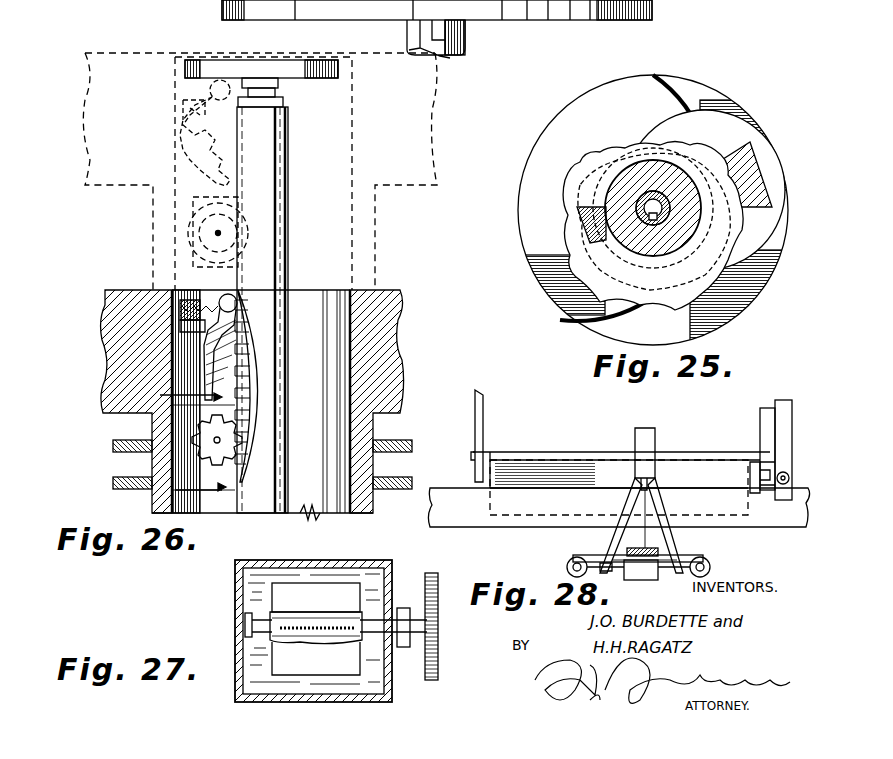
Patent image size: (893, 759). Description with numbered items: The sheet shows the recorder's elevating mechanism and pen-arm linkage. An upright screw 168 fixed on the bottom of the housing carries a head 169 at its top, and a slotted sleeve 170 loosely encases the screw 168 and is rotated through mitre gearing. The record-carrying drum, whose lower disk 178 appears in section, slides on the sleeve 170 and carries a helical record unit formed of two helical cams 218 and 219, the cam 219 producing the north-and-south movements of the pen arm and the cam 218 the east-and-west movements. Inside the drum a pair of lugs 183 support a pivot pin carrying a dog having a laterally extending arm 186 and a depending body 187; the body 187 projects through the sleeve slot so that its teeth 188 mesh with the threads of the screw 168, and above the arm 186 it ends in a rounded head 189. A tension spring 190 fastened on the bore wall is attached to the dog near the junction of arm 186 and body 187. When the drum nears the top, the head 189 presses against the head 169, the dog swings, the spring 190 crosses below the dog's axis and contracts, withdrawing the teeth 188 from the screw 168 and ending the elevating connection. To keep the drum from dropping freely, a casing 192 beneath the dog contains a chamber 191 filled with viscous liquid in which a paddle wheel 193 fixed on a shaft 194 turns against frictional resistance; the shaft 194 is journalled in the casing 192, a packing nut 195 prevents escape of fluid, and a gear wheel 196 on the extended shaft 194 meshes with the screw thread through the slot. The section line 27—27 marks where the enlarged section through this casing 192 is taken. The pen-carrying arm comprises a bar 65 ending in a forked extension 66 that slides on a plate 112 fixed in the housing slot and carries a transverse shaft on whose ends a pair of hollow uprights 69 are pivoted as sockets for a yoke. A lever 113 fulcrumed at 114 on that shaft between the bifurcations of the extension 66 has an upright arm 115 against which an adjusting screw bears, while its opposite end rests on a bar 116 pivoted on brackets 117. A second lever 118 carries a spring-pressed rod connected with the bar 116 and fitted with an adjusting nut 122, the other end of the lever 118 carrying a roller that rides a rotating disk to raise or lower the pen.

In FIG. 26, the head 169 is at (245, 70).
In FIG. 26, the upright screw 168 is at (280, 94).
In FIG. 26, the sleeve 170 is at (290, 148).
In FIG. 26, the depending body 187 is at (190, 148).
In FIG. 26, the lugs 183 is at (173, 313).
In FIG. 26, the tension spring 190 is at (170, 307).
In FIG. 26, the rounded head 189 is at (207, 302).
In FIG. 26, the laterally extending arm 186 is at (200, 332).
In FIG. 26, the teeth 188 is at (233, 338).
In FIG. 26, the casing 192 is at (240, 412).
In FIG. 27, the casing 192 is at (335, 562).
In FIG. 26, the gear wheel 196 is at (230, 440).
In FIG. 27, the gear wheel 196 is at (436, 680).
In FIG. 26, the section line 27— 27 is at (180, 442).
In FIG. 27, the chamber 191 is at (262, 588).
In FIG. 27, the paddle wheel 193 is at (316, 629).
In FIG. 27, the shaft 194 is at (418, 616).
In FIG. 27, the packing nut 195 is at (402, 648).
In FIG. 25, the helical cam 218 is at (685, 108).
In FIG. 25, the helical cam 219 is at (578, 208).
In FIG. 25, the lower disk 178 is at (753, 287).
In FIG. 28, the bar 65 is at (635, 437).
In FIG. 28, the forked extension 66 is at (683, 545).
In FIG. 28, the hollow uprights 69 is at (567, 566).
In FIG. 28, the plate 112 is at (618, 493).
In FIG. 28, the lever 113 is at (640, 548).
In FIG. 28, the fulcrum 114 is at (645, 580).
In FIG. 28, the upright arm 115 is at (573, 556).
In FIG. 28, the bar 116 is at (621, 472).
In FIG. 28, the brackets 117 is at (762, 437).
In FIG. 28, the second lever 118 is at (783, 413).
In FIG. 28, the adjusting nut 122 is at (789, 477).